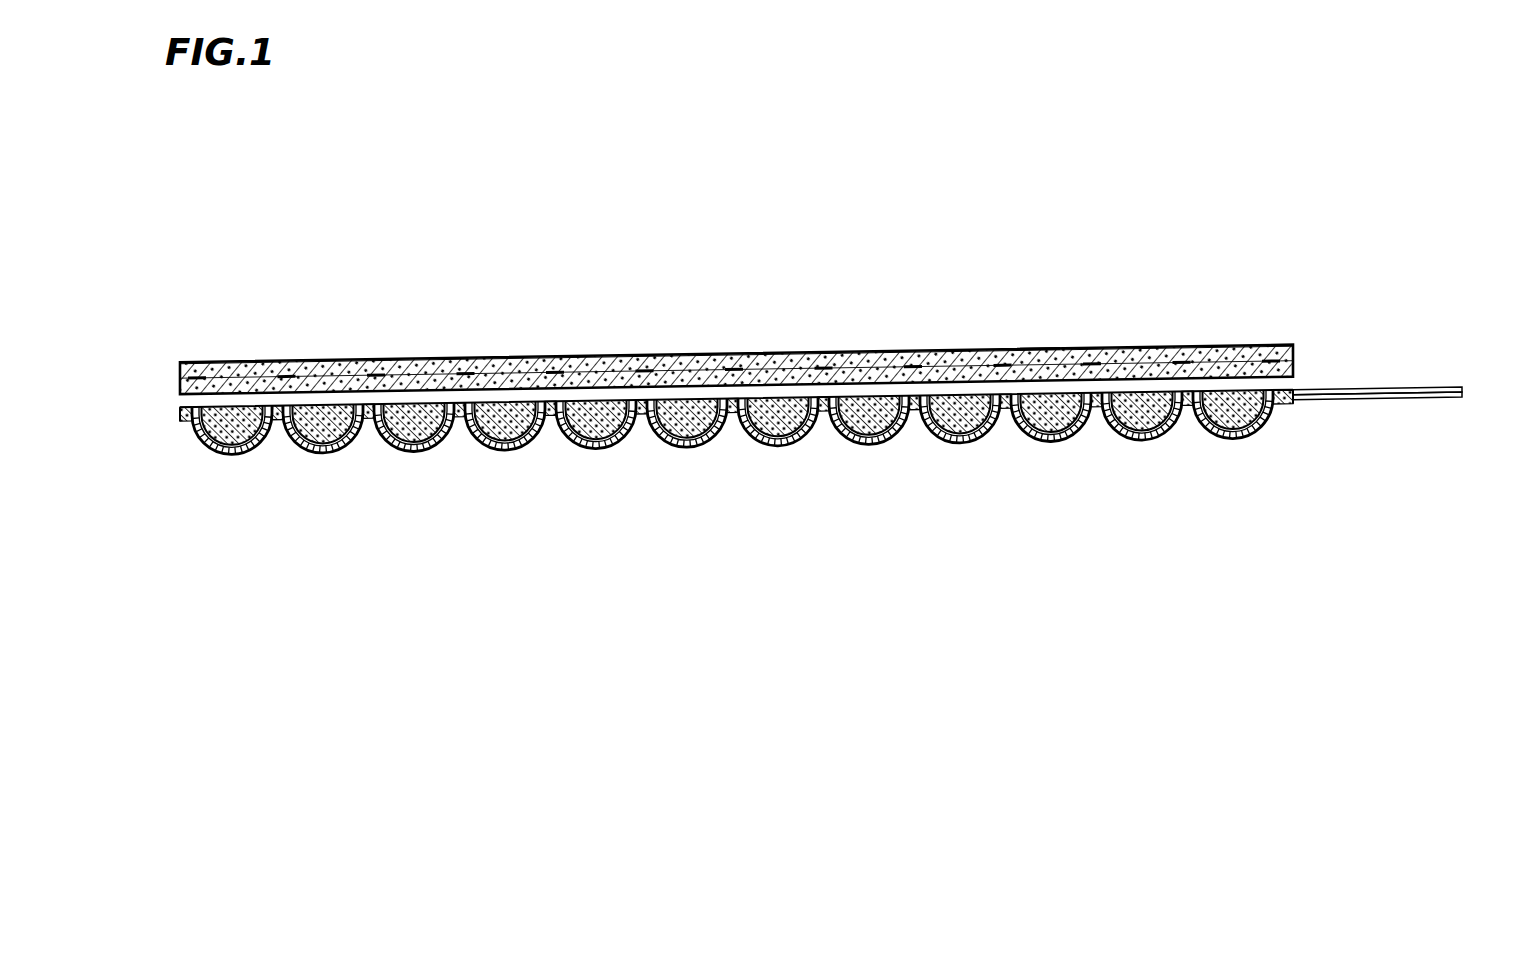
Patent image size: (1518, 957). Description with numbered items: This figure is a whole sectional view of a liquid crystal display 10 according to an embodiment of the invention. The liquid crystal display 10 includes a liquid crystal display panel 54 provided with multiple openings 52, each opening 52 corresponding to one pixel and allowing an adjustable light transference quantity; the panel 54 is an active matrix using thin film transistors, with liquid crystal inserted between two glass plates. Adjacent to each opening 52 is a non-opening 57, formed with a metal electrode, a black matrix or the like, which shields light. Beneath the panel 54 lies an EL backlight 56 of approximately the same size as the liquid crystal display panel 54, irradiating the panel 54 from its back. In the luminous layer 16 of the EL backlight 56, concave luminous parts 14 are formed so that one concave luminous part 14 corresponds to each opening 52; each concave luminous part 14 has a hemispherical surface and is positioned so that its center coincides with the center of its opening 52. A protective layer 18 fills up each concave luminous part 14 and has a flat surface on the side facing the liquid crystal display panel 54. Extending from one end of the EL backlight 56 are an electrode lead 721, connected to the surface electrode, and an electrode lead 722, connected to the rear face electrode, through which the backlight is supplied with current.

The liquid crystal display 10 is at (164, 455).
The concave luminous part 14 is at (1063, 433).
The luminous layer 16 is at (1043, 438).
The protective layer 18 is at (1026, 440).
The opening 52 is at (1037, 350).
The liquid crystal display panel 54 is at (1170, 348).
The EL backlight 56 is at (1253, 433).
The non-opening 57 is at (993, 350).
The electrode lead 721 is at (1377, 400).
The electrode lead 722 is at (1377, 432).